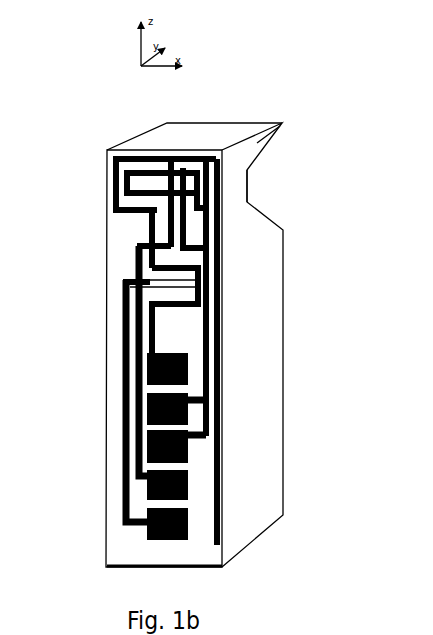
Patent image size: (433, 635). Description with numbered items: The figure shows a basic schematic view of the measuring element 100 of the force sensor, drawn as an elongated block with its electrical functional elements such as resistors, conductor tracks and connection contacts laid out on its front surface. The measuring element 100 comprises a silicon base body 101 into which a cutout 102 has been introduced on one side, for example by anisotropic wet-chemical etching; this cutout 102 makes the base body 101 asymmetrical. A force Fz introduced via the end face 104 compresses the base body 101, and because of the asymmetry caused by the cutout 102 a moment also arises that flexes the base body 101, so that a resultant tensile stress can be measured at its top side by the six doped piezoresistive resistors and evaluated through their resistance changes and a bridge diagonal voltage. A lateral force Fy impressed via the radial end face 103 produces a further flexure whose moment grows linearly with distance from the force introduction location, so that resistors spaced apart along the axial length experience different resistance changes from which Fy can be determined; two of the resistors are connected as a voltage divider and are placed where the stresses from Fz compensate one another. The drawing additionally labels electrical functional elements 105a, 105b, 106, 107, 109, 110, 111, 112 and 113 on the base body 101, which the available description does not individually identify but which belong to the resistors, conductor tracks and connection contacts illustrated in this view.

The measuring element 100 is at (104, 149).
The silicon base body 101 is at (257, 308).
The cutout 102 is at (250, 188).
The radial end face 103 is at (255, 145).
The end face 104 is at (177, 137).
The first antenna structure 105a is at (213, 327).
The second antenna structure 105b is at (118, 399).
The conductor segment 106 is at (113, 186).
The conductor segment 107 is at (120, 162).
The conductor segment 109 is at (119, 206).
The connecting conductor 110 is at (147, 224).
The connecting conductor 111 is at (130, 283).
The via connection 112 is at (128, 210).
The contact pads 113 is at (188, 473).